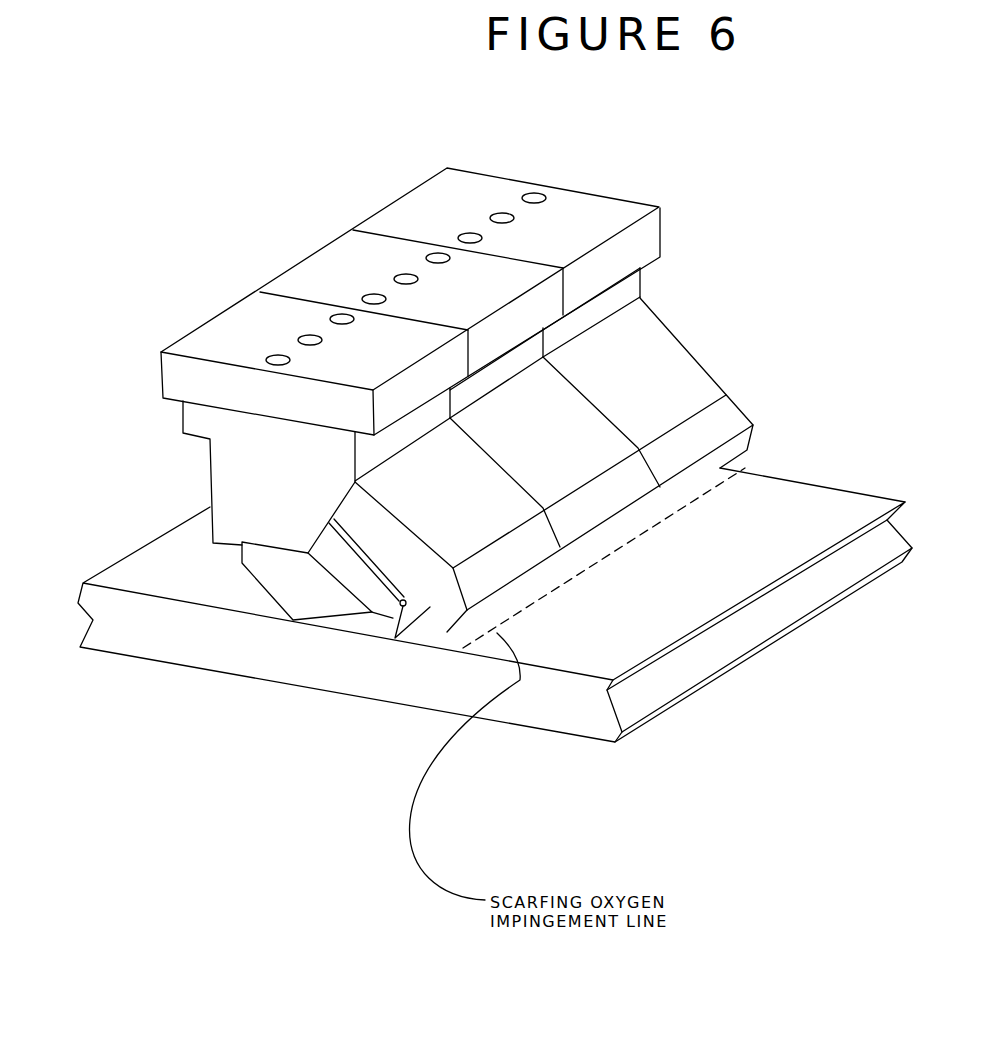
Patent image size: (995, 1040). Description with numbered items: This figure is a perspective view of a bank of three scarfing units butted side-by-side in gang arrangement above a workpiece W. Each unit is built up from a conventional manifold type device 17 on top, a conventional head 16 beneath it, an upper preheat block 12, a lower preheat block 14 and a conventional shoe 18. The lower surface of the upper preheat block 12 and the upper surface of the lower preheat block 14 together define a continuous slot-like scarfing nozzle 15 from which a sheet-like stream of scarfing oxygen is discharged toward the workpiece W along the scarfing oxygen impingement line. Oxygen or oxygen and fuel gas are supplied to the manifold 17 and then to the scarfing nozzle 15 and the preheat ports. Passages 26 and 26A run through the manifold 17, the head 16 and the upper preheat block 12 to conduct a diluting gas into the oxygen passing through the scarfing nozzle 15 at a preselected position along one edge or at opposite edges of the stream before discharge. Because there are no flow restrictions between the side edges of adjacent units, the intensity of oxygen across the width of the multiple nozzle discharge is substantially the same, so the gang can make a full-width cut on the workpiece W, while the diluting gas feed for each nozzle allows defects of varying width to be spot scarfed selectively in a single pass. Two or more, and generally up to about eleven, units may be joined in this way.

The upper preheat block 12 is at (665, 402).
The lower preheat block 14 is at (362, 590).
The scarfing nozzle 15 is at (392, 585).
The head 16 is at (218, 463).
The manifold type device 17 is at (178, 370).
The shoe 18 is at (293, 585).
The passage 26 is at (474, 240).
The passage 26A is at (500, 213).
The workpiece W is at (703, 610).